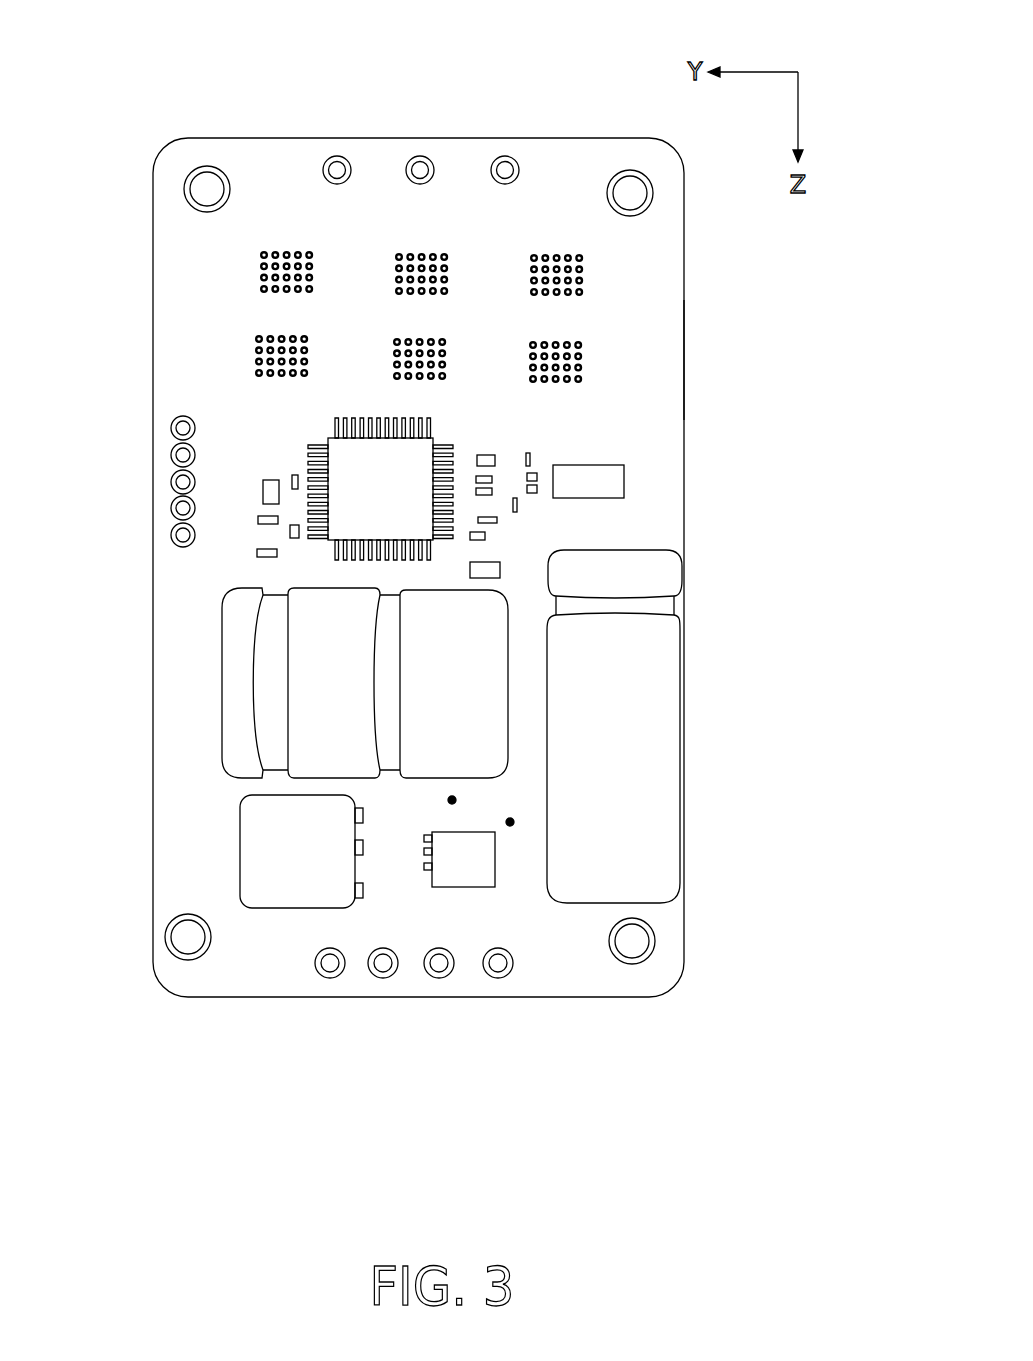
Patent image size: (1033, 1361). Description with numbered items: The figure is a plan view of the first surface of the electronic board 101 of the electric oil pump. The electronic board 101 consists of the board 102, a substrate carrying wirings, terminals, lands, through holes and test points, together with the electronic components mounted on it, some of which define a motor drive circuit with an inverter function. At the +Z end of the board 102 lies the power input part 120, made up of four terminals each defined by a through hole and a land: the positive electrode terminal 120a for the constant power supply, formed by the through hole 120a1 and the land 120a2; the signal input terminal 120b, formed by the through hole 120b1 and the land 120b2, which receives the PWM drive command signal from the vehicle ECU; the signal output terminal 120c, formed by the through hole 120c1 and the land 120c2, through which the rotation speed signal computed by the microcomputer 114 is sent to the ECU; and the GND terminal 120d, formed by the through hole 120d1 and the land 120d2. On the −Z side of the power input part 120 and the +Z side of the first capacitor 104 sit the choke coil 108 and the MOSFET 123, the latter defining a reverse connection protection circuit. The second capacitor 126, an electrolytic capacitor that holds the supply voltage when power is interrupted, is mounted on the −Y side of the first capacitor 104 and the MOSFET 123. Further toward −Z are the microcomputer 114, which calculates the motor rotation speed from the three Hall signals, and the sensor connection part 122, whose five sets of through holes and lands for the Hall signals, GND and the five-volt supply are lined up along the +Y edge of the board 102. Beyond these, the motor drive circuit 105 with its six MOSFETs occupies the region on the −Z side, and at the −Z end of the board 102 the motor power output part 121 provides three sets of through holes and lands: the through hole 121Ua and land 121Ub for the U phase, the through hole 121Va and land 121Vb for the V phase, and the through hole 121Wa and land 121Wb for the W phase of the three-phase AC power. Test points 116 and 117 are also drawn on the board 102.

The electronic board 101 is at (686, 401).
The board 102 is at (684, 338).
The first capacitor 104 is at (222, 723).
The motor drive circuit 105 is at (600, 313).
The choke coil 108 is at (240, 833).
The microcomputer 114 is at (433, 437).
The test point 116 is at (447, 800).
The test point 117 is at (510, 826).
The power input part 120 is at (437, 1060).
The positive electrode terminal 120a is at (585, 1022).
The through hole 120a1 is at (500, 964).
The land 120a2 is at (503, 964).
The signal input terminal 120b is at (521, 1057).
The through hole 120b1 is at (443, 966).
The land 120b2 is at (441, 968).
The signal output terminal 120c is at (313, 1060).
The through hole 120c1 is at (375, 975).
The land 120c2 is at (382, 976).
The GND terminal 120d is at (238, 1020).
The through hole 120d1 is at (317, 975).
The land 120d2 is at (327, 976).
The motor power output part 121 is at (385, 98).
The through hole 121Ua is at (328, 162).
The land 121Ub is at (342, 158).
The through hole 121Wa is at (409, 158).
The land 121Wb is at (436, 158).
The through hole 121Va is at (500, 157).
The land 121Vb is at (519, 158).
The sensor connection part 122 is at (182, 560).
The MOSFET 123 is at (465, 832).
The second capacitor 126 is at (645, 548).